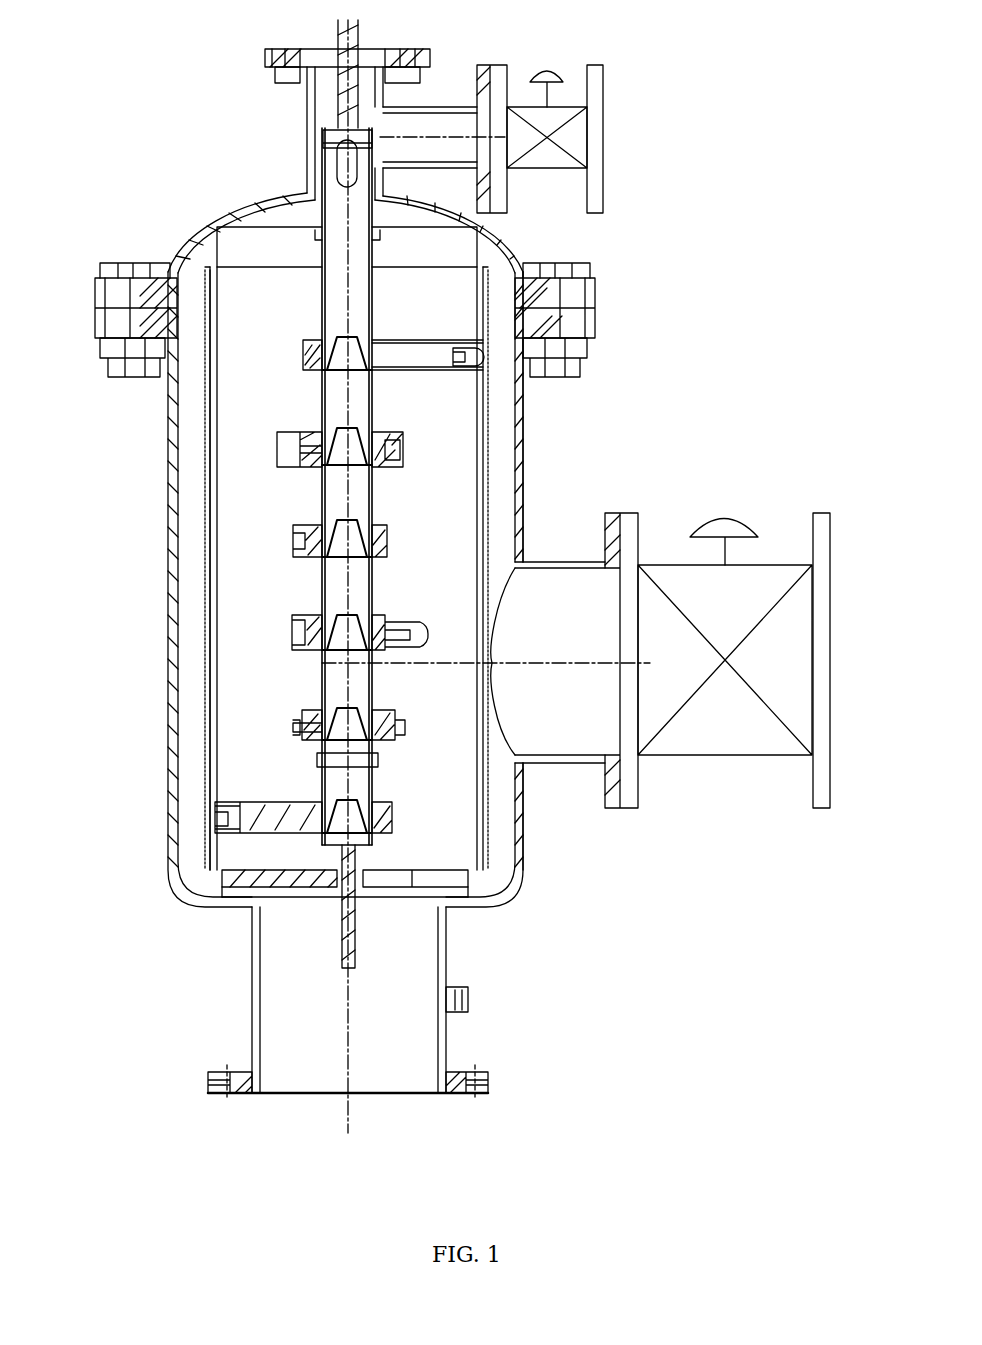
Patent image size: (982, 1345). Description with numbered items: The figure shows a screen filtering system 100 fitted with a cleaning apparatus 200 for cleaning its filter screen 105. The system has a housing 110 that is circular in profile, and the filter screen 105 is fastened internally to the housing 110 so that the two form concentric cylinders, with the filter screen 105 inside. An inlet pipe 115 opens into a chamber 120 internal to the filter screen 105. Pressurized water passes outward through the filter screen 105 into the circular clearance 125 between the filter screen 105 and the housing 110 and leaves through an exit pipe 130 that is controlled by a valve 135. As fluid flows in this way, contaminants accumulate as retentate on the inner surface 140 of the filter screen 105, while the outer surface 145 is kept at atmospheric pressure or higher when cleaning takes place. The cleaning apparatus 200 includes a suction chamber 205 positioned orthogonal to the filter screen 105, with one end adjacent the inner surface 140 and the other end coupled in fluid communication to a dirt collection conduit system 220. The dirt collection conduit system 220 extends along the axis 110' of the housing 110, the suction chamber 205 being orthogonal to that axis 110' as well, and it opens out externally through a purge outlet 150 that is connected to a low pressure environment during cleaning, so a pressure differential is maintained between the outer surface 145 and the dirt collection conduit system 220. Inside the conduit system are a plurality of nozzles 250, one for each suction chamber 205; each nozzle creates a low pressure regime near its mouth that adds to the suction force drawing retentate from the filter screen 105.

The screen filtering system 100 is at (180, 1117).
The filter screen 105 is at (207, 570).
The housing 110 is at (290, 589).
The axis 110' is at (360, 1044).
The inlet pipe 115 is at (447, 1048).
The chamber 120 is at (462, 835).
The circular clearance 125 is at (507, 482).
The exit pipe 130 is at (573, 767).
The valve 135 is at (750, 757).
The inner surface 140 is at (215, 612).
The outer surface 145 is at (205, 663).
The purge outlet 150 is at (603, 128).
The cleaning apparatus 200 is at (418, 382).
The suction chamber 205 is at (443, 380).
The dirt collection conduit system 220 is at (457, 170).
The nozzles 250 is at (372, 298).